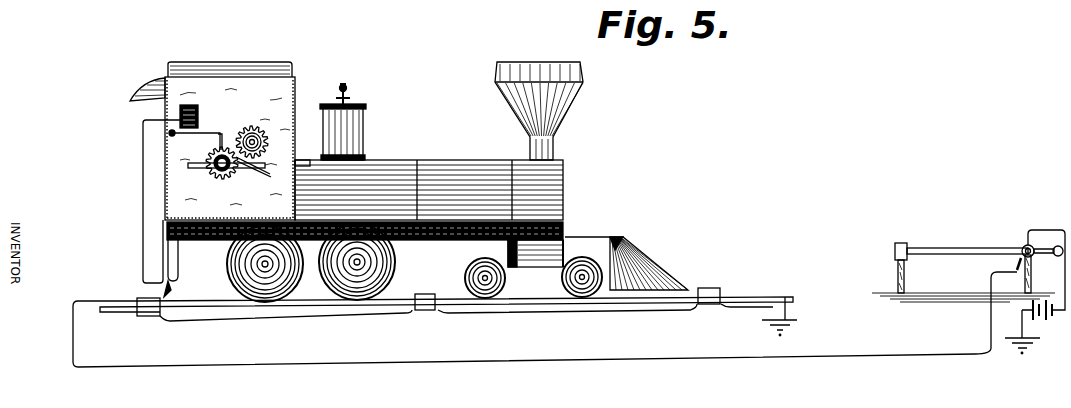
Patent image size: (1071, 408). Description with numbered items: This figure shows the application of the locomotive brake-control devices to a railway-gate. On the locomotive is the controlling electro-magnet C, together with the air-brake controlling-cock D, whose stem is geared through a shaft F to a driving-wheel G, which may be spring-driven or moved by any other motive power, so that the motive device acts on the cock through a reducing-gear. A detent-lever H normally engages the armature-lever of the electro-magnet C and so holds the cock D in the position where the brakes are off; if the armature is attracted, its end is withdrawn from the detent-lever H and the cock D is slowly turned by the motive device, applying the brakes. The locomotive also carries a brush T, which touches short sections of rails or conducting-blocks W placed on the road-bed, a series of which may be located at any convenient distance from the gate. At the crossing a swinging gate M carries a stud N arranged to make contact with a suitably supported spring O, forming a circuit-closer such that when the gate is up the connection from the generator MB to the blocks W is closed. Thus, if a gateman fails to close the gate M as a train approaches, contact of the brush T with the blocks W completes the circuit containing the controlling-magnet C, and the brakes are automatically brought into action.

The electro-magnet C is at (198, 121).
The detent-lever H is at (218, 146).
The shaft F is at (225, 140).
The driving-wheel G is at (250, 136).
The driving motor gear B is at (200, 189).
The controlling-cock D is at (253, 172).
The brush T is at (171, 292).
The conducting-blocks W is at (716, 290).
The swinging gate M is at (974, 261).
The stud N is at (1050, 258).
The spring O is at (1017, 268).
The generator MB is at (1034, 327).